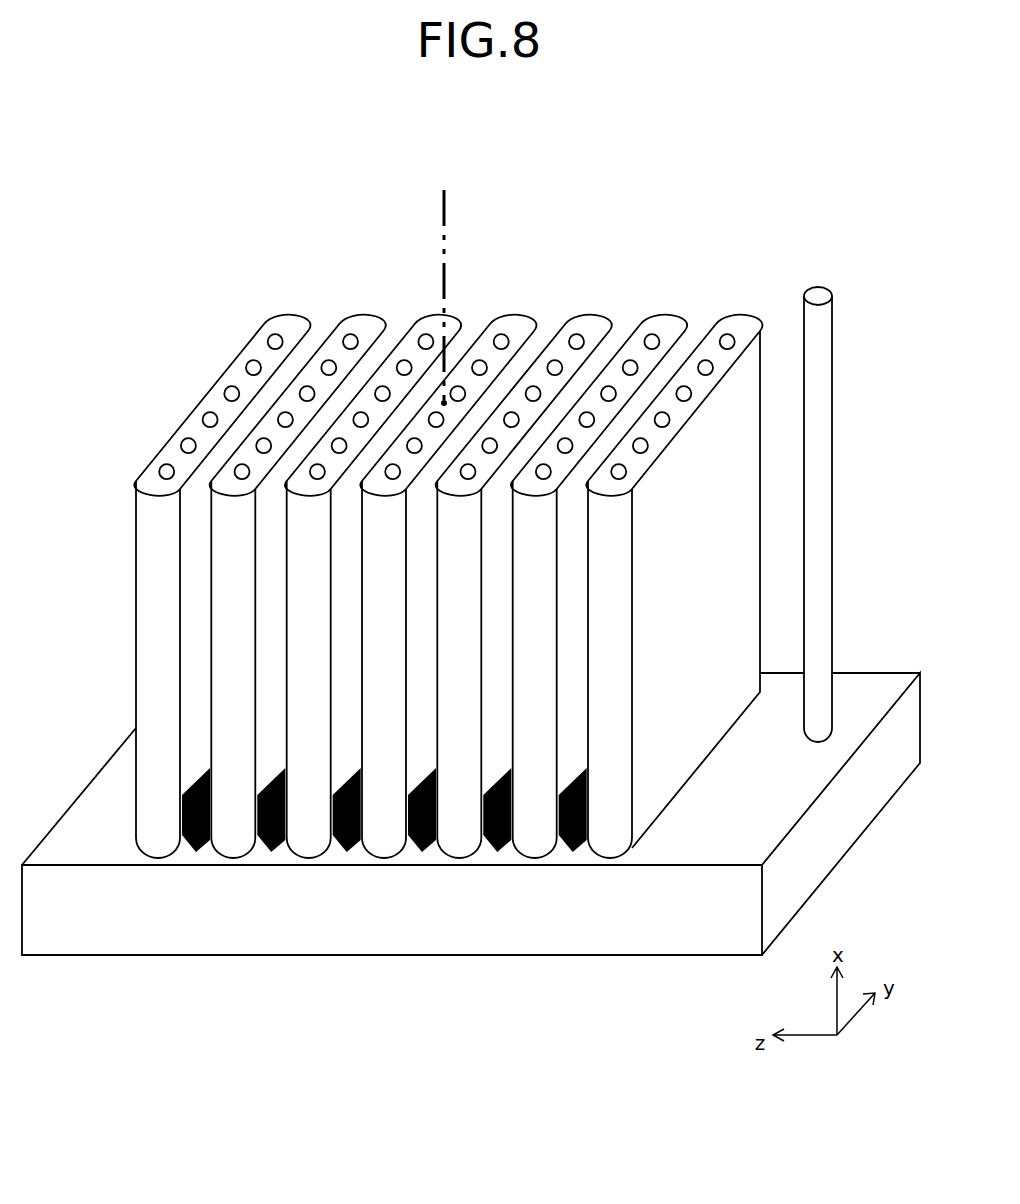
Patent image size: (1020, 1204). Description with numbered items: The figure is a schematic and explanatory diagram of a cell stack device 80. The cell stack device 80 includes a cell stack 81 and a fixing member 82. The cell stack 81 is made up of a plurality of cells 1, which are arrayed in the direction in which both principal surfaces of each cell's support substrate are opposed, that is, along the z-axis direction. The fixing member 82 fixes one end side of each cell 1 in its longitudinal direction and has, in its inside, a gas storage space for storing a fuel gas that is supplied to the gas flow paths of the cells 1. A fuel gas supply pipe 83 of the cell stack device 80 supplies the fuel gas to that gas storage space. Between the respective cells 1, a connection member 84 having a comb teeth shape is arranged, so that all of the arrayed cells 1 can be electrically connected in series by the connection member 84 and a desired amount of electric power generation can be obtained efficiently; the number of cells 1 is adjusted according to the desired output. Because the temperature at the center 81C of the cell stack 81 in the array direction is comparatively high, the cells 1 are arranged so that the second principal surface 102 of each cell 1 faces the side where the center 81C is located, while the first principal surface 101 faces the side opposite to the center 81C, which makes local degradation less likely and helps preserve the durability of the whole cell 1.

The cell stack device 80 is at (110, 143).
The cell stack 81 is at (118, 310).
The center of the cell stack 81C is at (446, 283).
The fixing member 82 is at (657, 932).
The fuel gas supply pipe 83 is at (835, 478).
The connection member 84 is at (355, 837).
The first principal surface 101 is at (740, 405).
The second principal surface 102 is at (295, 365).
The cell 1 is at (588, 317).